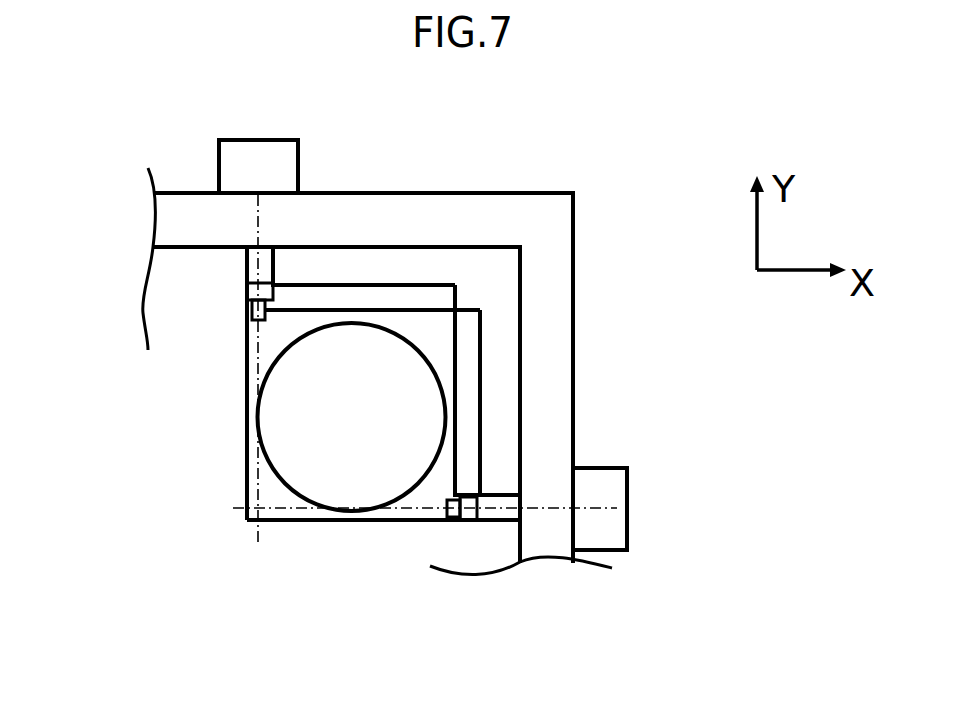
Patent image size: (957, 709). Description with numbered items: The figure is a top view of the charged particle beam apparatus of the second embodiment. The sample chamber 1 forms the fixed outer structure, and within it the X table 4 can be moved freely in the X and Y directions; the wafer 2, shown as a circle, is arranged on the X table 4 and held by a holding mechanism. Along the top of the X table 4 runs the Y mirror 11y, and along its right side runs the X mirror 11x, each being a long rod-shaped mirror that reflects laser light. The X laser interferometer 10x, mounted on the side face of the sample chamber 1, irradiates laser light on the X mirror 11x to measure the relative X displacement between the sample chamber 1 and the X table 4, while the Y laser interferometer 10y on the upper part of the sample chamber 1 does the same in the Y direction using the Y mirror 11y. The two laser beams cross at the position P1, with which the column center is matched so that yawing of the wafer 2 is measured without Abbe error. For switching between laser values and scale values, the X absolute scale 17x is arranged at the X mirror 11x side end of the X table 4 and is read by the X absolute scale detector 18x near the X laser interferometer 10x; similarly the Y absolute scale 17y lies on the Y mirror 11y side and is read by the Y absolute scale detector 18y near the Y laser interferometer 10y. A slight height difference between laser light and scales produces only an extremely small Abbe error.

The sample chamber 1 is at (560, 207).
The wafer 2 is at (325, 482).
The X table 4 is at (430, 495).
The X laser interferometer 10x is at (597, 483).
The Y laser interferometer 10y is at (245, 153).
The X mirror 11x is at (468, 442).
The Y mirror 11y is at (363, 300).
The X absolute scale 17x is at (455, 522).
The Y absolute scale 17y is at (252, 320).
The X absolute scale detector 18x is at (468, 513).
The Y absolute scale detector 18y is at (257, 293).
The position P1 is at (258, 510).